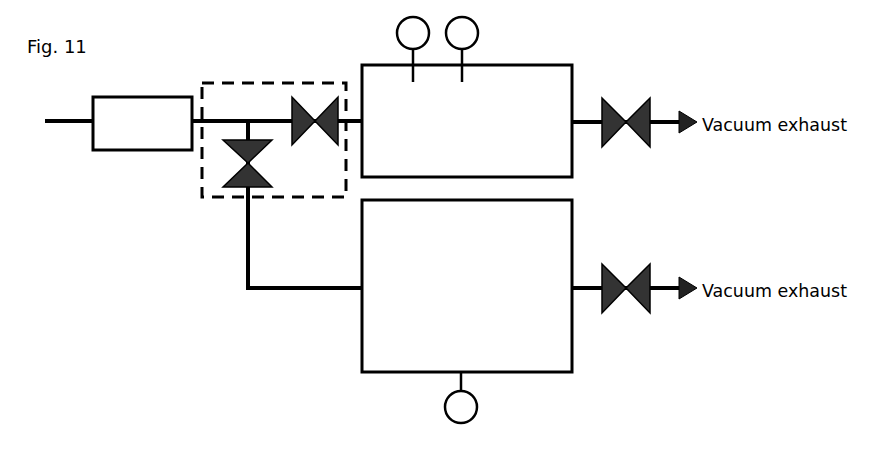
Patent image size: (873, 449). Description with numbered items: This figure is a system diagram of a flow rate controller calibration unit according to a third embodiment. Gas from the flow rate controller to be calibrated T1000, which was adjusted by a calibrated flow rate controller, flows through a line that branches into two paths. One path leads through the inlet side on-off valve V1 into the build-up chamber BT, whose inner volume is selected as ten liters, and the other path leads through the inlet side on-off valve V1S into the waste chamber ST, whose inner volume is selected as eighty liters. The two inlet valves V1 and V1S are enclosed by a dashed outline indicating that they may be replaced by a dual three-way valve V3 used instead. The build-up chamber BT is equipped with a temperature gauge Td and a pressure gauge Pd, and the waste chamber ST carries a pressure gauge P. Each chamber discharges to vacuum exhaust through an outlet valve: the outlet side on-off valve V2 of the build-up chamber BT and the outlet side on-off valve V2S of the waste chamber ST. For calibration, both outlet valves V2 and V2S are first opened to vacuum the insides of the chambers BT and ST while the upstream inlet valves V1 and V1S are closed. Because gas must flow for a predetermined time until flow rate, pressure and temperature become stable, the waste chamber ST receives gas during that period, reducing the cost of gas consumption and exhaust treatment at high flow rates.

The inlet side on-off valve of the build-up chamber V1 is at (307, 110).
The outlet side on-off valve of the build-up chamber V2 is at (615, 112).
The dual three-way valve V3 is at (202, 175).
The inlet side on-off valve of the waste chamber V1S is at (238, 190).
The outlet side on-off valve of the waste chamber V2S is at (620, 300).
The build-up chamber BT is at (540, 65).
The waste chamber ST is at (537, 372).
The flow rate controller to be calibrated T1000 is at (142, 123).
The temperature gauge Td is at (413, 49).
The pressure gauge Pd is at (462, 49).
The pressure gauge P is at (461, 397).